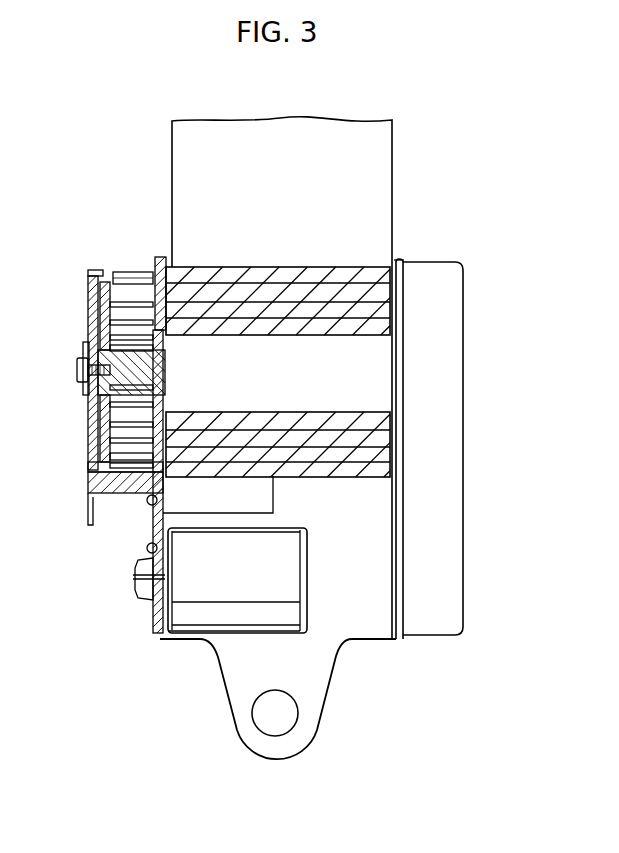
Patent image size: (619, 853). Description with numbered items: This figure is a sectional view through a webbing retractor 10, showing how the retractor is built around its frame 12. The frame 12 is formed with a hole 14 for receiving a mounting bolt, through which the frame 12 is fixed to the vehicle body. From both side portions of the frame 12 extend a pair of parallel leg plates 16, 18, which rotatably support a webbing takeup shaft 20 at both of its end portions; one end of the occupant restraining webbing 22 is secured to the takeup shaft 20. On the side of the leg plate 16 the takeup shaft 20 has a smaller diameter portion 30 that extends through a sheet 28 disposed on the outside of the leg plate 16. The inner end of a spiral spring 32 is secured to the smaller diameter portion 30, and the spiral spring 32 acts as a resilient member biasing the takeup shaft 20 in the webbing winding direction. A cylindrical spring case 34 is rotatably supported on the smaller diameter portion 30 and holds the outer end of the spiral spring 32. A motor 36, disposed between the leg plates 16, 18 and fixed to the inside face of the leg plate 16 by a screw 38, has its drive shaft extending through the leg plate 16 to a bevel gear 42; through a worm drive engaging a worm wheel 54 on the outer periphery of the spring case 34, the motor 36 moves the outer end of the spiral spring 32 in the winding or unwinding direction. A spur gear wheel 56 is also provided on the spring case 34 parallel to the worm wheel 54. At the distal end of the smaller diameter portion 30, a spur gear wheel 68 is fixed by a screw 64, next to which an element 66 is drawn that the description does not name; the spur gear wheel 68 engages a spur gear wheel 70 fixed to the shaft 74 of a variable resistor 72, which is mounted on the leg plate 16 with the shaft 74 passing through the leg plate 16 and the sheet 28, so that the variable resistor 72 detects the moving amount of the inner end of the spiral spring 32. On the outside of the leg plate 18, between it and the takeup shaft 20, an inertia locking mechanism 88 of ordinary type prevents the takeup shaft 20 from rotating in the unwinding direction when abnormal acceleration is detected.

The webbing retractor 10 is at (404, 259).
The frame 12 is at (375, 646).
The hole 14 is at (291, 693).
The leg plate 16 is at (152, 624).
The leg plate 18 is at (398, 644).
The webbing takeup shaft 20 is at (277, 340).
The occupant restraining webbing 22 is at (393, 158).
The sheet 28 is at (157, 255).
The smaller diameter portion 30 is at (98, 393).
The spiral spring 32 is at (120, 430).
The spring case 34 is at (150, 276).
The motor 36 is at (192, 641).
The screw 38 is at (147, 550).
The bevel gear 42 is at (140, 592).
The worm wheel 54 is at (118, 268).
The spur gear wheel 56 is at (103, 470).
The screw 64 is at (77, 370).
The flange 66 is at (84, 342).
The spur gear wheel 68 is at (87, 300).
The spur gear wheel 70 is at (88, 500).
The variable resistor 72 is at (278, 504).
The shaft 74 is at (126, 485).
The inertia locking mechanism 88 is at (465, 392).